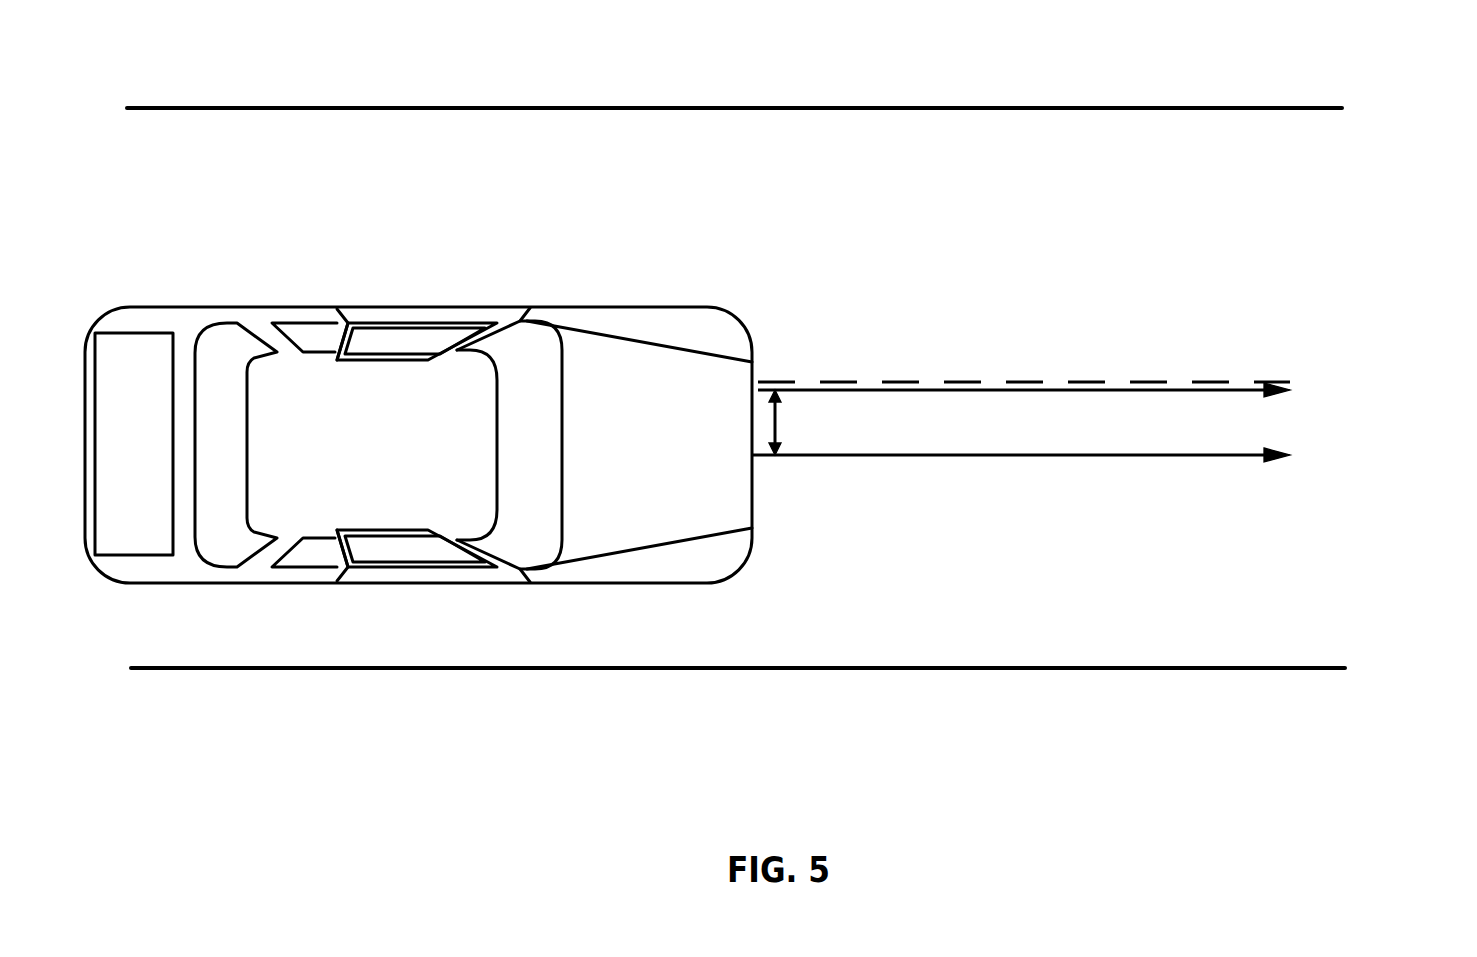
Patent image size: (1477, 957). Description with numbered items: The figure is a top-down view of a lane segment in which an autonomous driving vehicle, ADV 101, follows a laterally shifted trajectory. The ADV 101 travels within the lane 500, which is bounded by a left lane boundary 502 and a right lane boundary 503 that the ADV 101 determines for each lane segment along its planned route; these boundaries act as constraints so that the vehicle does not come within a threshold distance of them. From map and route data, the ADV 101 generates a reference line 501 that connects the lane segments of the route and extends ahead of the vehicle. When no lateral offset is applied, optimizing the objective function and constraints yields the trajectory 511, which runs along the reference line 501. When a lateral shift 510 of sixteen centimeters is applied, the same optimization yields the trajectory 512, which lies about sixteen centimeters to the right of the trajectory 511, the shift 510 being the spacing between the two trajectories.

The ADV 101 is at (418, 445).
The lane 500 is at (1226, 157).
The reference line 501 is at (1080, 382).
The left lane boundary 502 is at (987, 108).
The right lane boundary 503 is at (1048, 668).
The lateral shift 510 is at (782, 432).
The trajectory 511 is at (1262, 392).
The trajectory 512 is at (1138, 456).